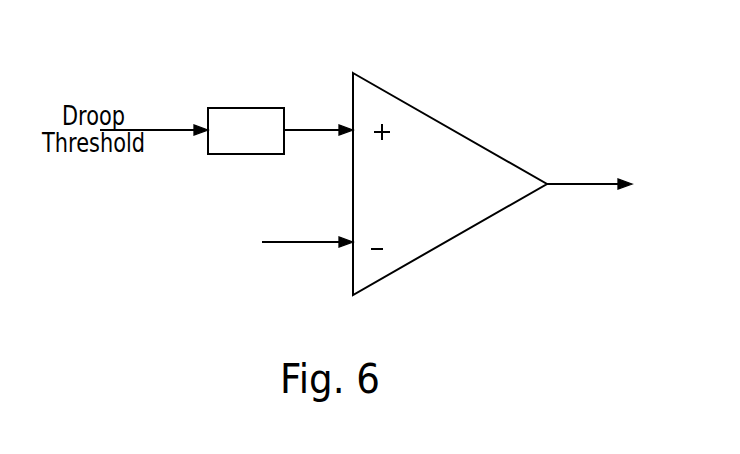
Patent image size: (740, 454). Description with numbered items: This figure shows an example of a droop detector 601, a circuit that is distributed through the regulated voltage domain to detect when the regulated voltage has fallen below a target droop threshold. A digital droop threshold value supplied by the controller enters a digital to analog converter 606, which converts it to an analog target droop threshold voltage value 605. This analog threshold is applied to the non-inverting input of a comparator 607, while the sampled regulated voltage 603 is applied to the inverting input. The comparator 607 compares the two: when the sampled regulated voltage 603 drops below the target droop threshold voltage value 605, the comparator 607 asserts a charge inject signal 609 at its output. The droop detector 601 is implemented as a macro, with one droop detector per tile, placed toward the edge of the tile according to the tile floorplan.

The droop detector 601 is at (477, 105).
The sampled regulated voltage 603 is at (287, 243).
The target droop threshold voltage value 605 is at (307, 130).
The digital to analog converter 606 is at (230, 108).
The comparator 607 is at (455, 237).
The charge inject signal 609 is at (583, 187).